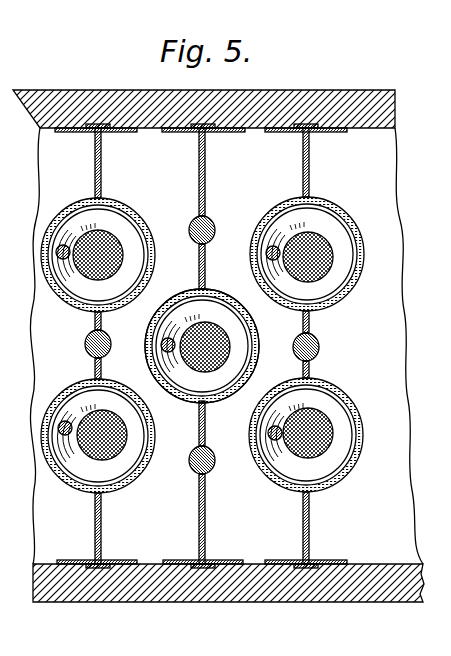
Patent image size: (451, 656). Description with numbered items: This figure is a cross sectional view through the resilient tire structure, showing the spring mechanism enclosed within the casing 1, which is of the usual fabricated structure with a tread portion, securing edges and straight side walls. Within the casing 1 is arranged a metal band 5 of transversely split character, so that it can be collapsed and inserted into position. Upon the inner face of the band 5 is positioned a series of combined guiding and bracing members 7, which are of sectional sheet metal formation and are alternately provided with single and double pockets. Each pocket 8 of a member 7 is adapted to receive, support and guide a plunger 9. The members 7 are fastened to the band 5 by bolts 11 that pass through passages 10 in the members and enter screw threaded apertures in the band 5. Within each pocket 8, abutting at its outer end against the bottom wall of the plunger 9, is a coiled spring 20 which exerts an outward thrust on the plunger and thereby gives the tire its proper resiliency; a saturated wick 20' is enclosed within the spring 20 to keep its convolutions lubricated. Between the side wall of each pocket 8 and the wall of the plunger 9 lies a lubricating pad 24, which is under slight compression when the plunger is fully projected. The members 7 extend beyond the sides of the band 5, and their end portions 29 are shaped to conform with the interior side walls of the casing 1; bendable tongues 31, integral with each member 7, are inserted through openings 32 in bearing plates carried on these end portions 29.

The casing 1 is at (327, 108).
The metal band 5 is at (217, 371).
The combined guiding and bracing member 7 is at (102, 170).
The pocket 8 is at (177, 295).
The plunger 9 is at (347, 226).
The passage 10 is at (320, 350).
The bolt 11 is at (314, 340).
The coiled spring 20 is at (144, 324).
The saturated wick 20' is at (197, 369).
The lubricating pad 24 is at (361, 270).
The end portion 29 is at (80, 132).
The bendable tongue 31 is at (94, 124).
The opening 32 is at (96, 566).